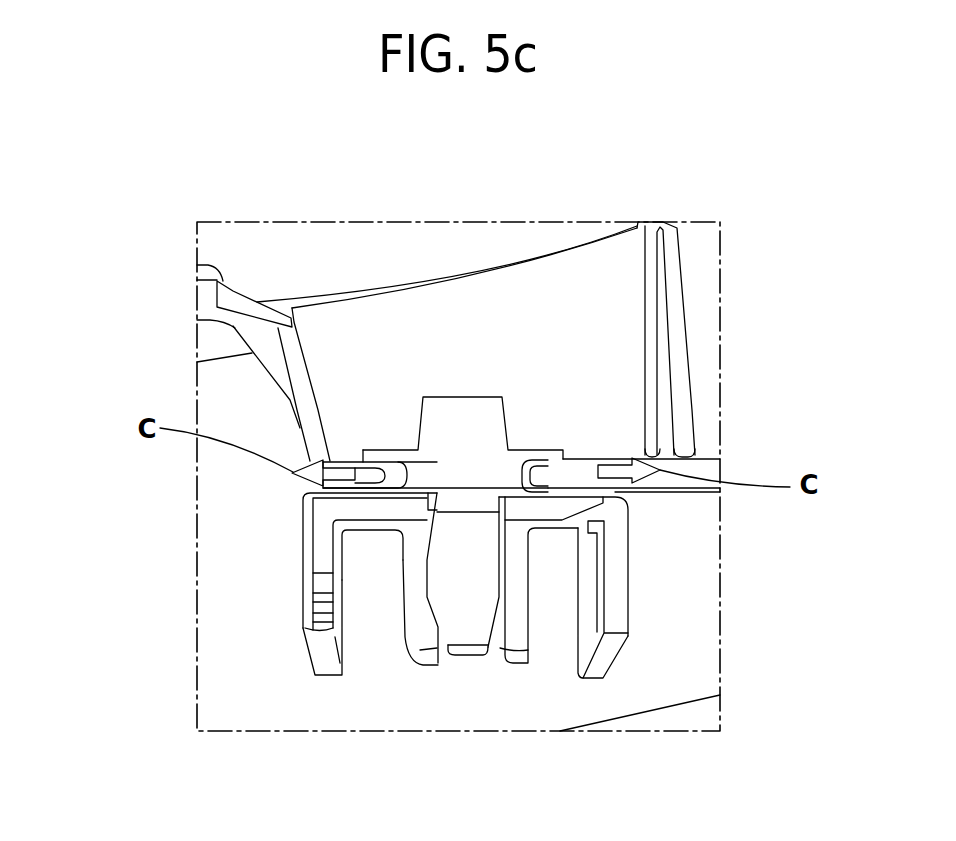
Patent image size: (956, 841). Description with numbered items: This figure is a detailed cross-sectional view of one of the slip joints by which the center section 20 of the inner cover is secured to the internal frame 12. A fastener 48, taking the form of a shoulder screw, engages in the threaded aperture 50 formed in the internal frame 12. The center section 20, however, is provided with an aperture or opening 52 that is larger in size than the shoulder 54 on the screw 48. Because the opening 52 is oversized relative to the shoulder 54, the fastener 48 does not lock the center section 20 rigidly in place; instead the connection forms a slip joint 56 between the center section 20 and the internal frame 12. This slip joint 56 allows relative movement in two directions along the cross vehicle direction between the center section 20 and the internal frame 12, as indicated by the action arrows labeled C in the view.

The internal frame 12 is at (617, 567).
The center section 20 is at (582, 468).
The fastener 48 is at (462, 427).
The threaded aperture 50 is at (432, 573).
The aperture or opening 52 is at (395, 473).
The shoulder 54 is at (458, 478).
The slip joint 56 is at (283, 487).